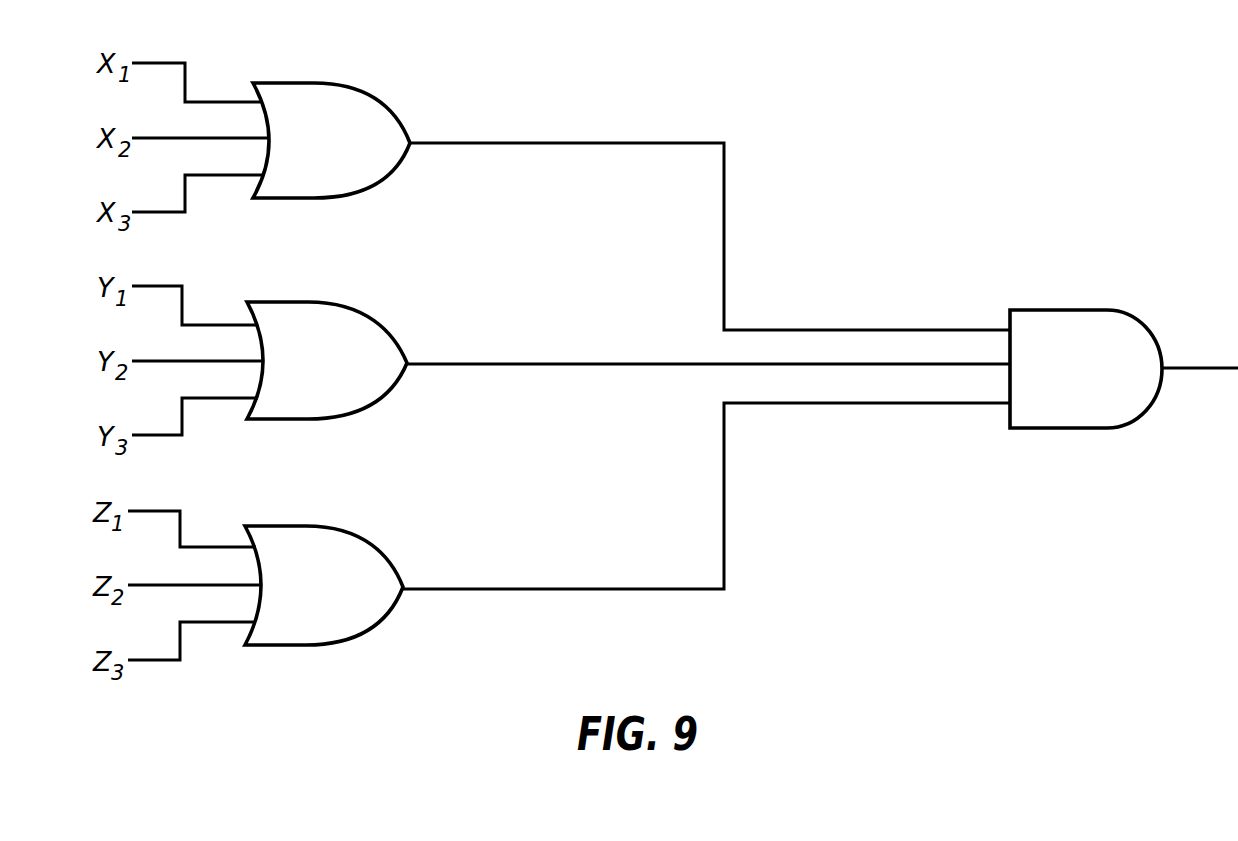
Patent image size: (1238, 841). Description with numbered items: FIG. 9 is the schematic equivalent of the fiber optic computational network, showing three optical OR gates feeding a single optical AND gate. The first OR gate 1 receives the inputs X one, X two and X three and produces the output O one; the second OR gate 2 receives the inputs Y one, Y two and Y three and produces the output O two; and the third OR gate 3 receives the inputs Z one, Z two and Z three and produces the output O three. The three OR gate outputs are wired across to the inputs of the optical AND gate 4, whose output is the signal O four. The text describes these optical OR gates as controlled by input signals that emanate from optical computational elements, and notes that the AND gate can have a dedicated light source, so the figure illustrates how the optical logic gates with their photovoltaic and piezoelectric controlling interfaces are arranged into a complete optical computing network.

The first OR gate producing output O1 1 is at (571, 196).
The second OR gate producing output O2 2 is at (571, 360).
The third OR gate producing output O3 3 is at (569, 531).
The AND gate producing output O4 4 is at (1124, 369).